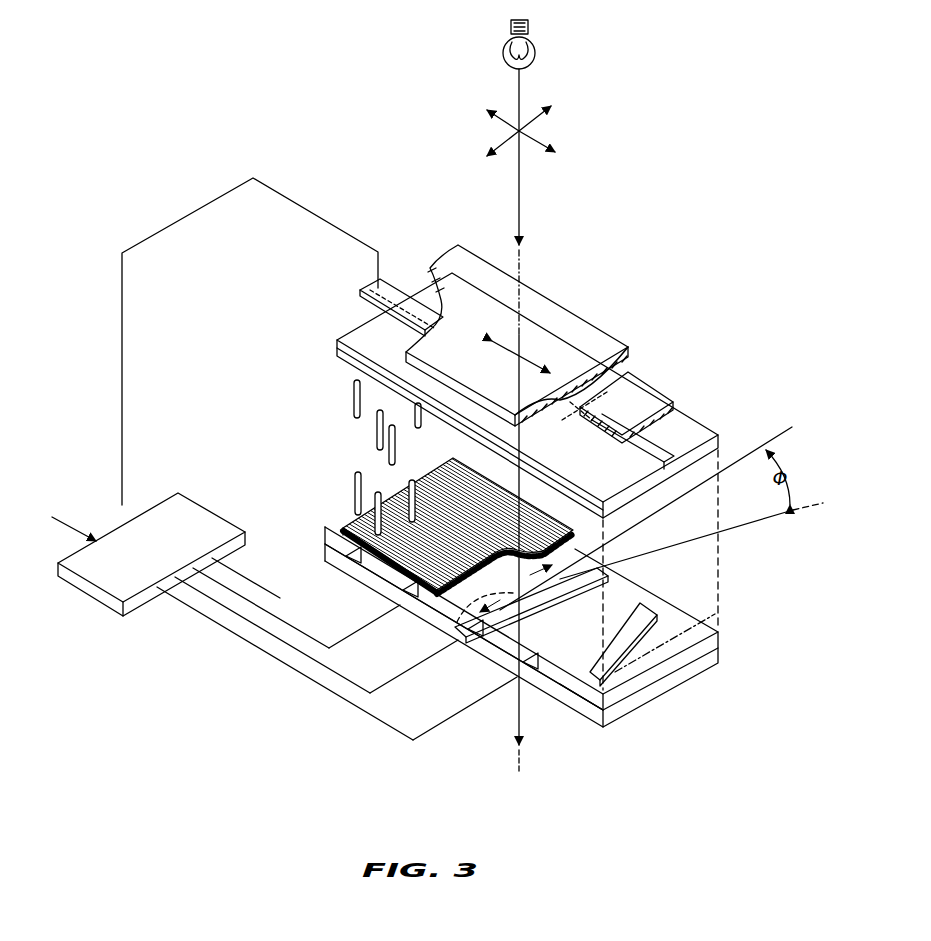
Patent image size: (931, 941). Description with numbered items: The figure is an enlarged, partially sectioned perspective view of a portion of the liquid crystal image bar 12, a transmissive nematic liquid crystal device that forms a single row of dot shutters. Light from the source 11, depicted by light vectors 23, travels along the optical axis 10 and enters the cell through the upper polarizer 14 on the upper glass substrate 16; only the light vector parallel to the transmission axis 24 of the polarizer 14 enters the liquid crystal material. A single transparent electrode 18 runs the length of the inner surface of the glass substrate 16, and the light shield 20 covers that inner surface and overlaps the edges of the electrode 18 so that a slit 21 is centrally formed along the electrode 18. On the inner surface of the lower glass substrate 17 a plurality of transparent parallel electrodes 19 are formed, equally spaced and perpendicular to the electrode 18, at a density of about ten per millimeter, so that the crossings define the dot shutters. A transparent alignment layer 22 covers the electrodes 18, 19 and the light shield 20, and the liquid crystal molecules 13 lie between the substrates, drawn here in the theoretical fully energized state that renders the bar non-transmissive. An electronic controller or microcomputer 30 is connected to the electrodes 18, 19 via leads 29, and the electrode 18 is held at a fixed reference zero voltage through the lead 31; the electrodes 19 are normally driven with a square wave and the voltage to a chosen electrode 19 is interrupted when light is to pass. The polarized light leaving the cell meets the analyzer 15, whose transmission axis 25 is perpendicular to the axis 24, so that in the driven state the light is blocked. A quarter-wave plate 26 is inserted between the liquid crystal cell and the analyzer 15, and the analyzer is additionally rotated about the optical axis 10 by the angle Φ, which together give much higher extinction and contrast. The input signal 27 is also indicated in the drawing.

The optical axis 10 is at (521, 200).
The light source 11 is at (537, 42).
The liquid crystal image bar 12 is at (362, 147).
The liquid crystal molecules 13 is at (373, 432).
The upper polarizer 14 is at (560, 312).
The analyzer 15 is at (710, 668).
The upper glass substrate 16 is at (632, 357).
The lower glass substrate 17 is at (660, 578).
The transparent electrode 18 is at (382, 292).
The transparent parallel electrodes 19 is at (580, 640).
The light shield 20 is at (558, 458).
The slit 21 is at (402, 322).
The transparent alignment layer 22 is at (433, 478).
The light vectors 23 is at (545, 122).
The transmission axis of polarizer 24 is at (540, 362).
The transmission axis of analyzer 25 is at (433, 630).
The quarter-wave plate 26 is at (718, 648).
The input signal 27 is at (72, 528).
The leads 29 is at (280, 598).
The electronic controller 30 is at (193, 508).
The lead 31 is at (123, 325).